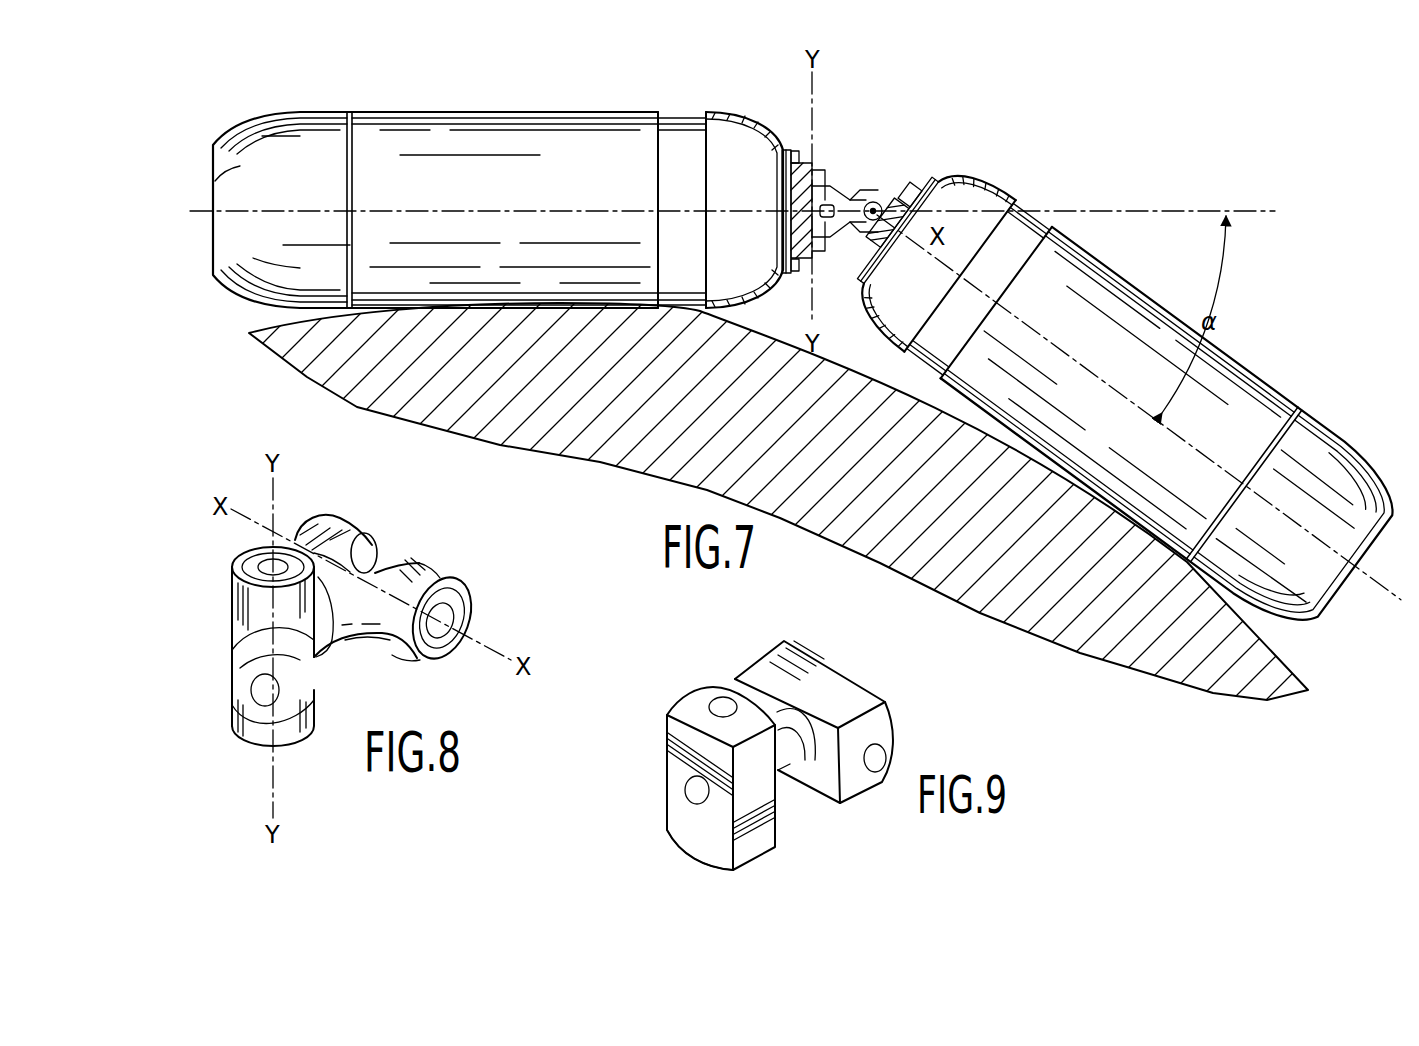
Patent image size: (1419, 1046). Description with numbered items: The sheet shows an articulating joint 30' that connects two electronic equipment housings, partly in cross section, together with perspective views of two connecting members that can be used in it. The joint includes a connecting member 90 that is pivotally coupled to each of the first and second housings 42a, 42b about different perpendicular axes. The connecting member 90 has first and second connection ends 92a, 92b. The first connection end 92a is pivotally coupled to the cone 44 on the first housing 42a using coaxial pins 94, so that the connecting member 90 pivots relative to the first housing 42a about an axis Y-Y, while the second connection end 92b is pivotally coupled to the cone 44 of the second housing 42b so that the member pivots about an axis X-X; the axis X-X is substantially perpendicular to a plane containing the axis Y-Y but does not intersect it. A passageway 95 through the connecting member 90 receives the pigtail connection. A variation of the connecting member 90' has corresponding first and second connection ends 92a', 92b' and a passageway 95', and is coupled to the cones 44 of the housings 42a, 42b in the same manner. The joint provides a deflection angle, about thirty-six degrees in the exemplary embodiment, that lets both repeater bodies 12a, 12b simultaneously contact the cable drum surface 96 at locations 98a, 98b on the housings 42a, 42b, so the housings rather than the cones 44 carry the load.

In FIG. 7, the repeater body 12a is at (622, 93).
In FIG. 7, the repeater body 12b is at (1246, 346).
In FIG. 7, the first housing 42a is at (493, 112).
In FIG. 7, the second housing 42b is at (1144, 292).
In FIG. 7, the cone 44 is at (746, 112).
In FIG. 7, the articulating joint 30' is at (877, 181).
In FIG. 7, the connecting member 90 is at (847, 169).
In FIG. 8, the connecting member 90 is at (361, 610).
In FIG. 7, the first connection end 92a is at (772, 209).
In FIG. 8, the first connection end 92a is at (235, 646).
In FIG. 7, the second connection end 92b is at (898, 241).
In FIG. 8, the second connection end 92b is at (441, 595).
In FIG. 7, the coaxial pins 94 is at (781, 156).
In FIG. 7, the passageway 95 is at (786, 224).
In FIG. 8, the passageway 95 is at (245, 675).
In FIG. 7, the cable drum surface 96 is at (830, 352).
In FIG. 7, the contact location 98a is at (500, 318).
In FIG. 7, the contact location 98b is at (1118, 524).
In FIG. 9, the connecting member 90' is at (839, 803).
In FIG. 9, the first connection end 92a' is at (689, 759).
In FIG. 9, the second connection end 92b' is at (814, 704).
In FIG. 9, the passageway 95' is at (708, 757).